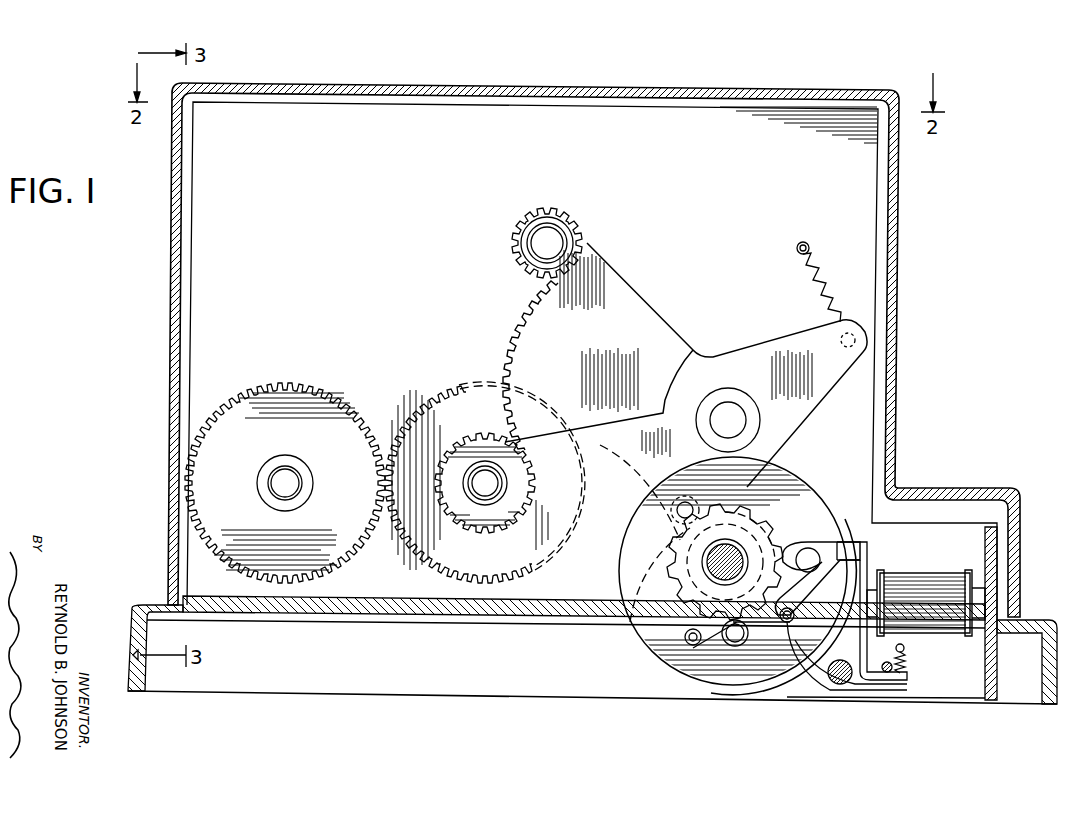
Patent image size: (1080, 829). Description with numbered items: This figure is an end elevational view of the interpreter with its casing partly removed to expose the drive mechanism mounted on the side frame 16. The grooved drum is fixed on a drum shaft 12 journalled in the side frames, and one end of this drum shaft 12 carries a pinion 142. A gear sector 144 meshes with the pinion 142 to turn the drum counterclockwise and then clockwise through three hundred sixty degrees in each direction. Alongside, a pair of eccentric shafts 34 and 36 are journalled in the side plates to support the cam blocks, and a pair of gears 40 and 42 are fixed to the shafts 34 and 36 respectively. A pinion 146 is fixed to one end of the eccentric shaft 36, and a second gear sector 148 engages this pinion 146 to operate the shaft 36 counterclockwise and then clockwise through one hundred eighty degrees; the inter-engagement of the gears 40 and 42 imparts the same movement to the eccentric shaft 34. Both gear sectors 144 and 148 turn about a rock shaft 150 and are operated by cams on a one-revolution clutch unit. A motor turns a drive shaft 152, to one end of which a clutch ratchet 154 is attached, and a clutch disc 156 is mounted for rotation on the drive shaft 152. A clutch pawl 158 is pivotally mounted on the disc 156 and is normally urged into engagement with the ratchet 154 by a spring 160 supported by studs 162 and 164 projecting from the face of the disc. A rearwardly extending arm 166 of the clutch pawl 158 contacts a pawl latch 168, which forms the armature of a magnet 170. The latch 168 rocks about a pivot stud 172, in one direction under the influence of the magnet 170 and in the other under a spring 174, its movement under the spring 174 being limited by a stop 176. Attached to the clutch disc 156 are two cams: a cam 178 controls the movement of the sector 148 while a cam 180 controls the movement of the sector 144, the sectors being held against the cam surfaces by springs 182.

The side frame 16 is at (458, 135).
The pinion 142 is at (533, 228).
The drum shaft 12 is at (558, 240).
The gear sector 144 is at (638, 310).
The rock shaft 150 is at (728, 410).
The spring 182 is at (828, 285).
The gear 40 is at (298, 383).
The eccentric shaft 34 is at (290, 483).
The gear 42 is at (487, 395).
The pinion 146 is at (460, 455).
The eccentric shaft 36 is at (478, 500).
The gear sector 148 is at (587, 548).
The clutch disc 156 is at (800, 495).
The cam 178 is at (826, 505).
The clutch pawl 158 is at (838, 545).
The clutch ratchet 154 is at (738, 525).
The drive shaft 152 is at (732, 572).
The stud 164 is at (693, 630).
The spring 160 is at (781, 620).
The rearwardly extending arm 166 is at (862, 547).
The pawl latch 168 is at (888, 565).
The magnet 170 is at (920, 580).
The stop 176 is at (885, 663).
The spring 174 is at (905, 662).
The cam 180 is at (790, 668).
The pivot stud 172 is at (842, 684).
The stud 162 is at (735, 646).